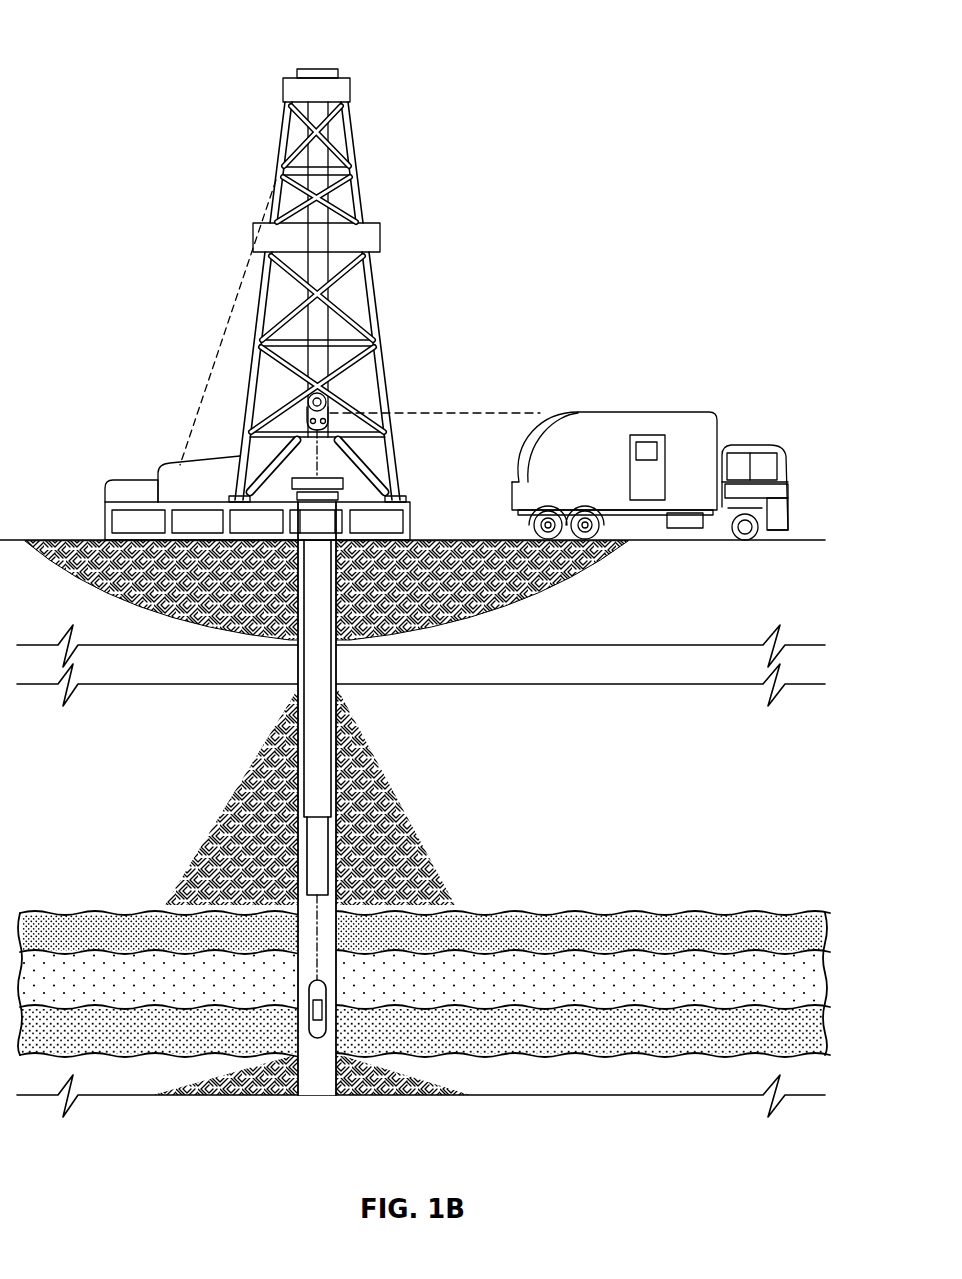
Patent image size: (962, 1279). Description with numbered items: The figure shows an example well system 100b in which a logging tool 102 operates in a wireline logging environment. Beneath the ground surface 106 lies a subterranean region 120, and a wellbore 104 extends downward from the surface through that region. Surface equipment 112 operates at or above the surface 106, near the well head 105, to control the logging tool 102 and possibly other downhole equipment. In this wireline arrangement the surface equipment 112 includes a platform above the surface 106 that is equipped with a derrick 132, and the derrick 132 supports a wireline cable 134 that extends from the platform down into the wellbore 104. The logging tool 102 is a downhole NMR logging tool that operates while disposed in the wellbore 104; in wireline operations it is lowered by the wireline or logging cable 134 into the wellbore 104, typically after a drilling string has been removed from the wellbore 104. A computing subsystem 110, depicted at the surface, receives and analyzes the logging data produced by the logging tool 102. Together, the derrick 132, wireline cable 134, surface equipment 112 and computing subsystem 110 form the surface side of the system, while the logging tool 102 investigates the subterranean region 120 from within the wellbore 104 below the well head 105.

The well system 100b is at (141, 38).
The logging tool 102 is at (306, 1022).
The wellbore 104 is at (300, 702).
The well head 105 is at (335, 480).
The ground surface 106 is at (447, 540).
The computing subsystem 110 is at (648, 440).
The surface equipment 112 is at (464, 335).
The subterranean region 120 is at (549, 845).
The derrick 132 is at (367, 192).
The wireline cable 134 is at (313, 470).